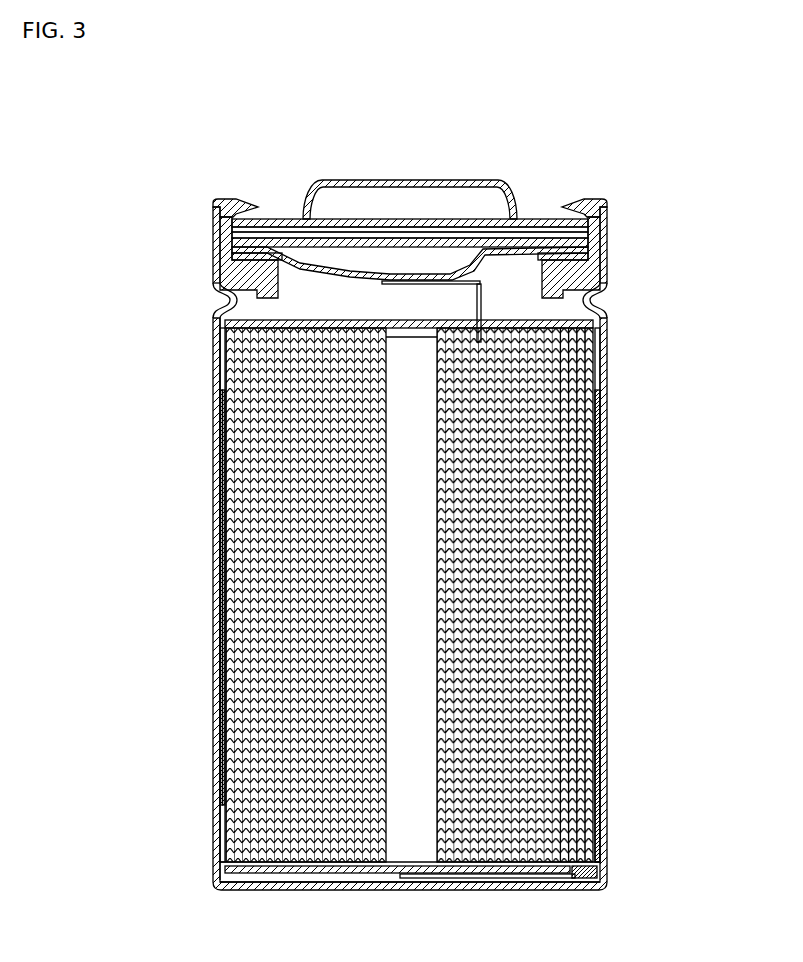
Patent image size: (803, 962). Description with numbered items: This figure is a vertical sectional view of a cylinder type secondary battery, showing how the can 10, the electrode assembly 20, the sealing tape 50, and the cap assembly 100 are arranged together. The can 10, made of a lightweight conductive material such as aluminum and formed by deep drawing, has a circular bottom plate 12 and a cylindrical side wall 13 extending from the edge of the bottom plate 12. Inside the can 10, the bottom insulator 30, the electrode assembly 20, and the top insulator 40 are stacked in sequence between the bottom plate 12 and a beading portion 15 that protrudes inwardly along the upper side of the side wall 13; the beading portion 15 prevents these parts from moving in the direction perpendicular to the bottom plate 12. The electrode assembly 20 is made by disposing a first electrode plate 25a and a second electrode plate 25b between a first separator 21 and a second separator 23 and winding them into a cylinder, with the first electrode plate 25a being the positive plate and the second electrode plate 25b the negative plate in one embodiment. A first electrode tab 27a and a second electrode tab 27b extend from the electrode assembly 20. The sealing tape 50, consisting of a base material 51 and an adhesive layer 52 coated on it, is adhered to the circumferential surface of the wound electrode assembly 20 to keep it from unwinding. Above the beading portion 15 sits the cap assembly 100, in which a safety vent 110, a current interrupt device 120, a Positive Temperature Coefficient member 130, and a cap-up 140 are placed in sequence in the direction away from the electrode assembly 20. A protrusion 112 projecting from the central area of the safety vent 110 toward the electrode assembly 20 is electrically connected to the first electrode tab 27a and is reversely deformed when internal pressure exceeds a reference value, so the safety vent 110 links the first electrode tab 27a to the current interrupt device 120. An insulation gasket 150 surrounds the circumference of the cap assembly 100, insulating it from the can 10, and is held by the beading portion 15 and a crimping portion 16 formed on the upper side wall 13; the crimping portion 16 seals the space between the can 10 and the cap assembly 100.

The cap assembly 100 is at (410, 173).
The safety vent 110 is at (328, 240).
The protrusion 112 is at (524, 108).
The cap-up 140 is at (410, 181).
The current interrupt device 120 is at (462, 240).
The Positive Temperature Coefficient member 130 is at (540, 220).
The insulation gasket 150 is at (586, 200).
The crimping portion 16 is at (238, 205).
The beading portion 15 is at (228, 303).
The top insulator 40 is at (228, 322).
The can 10 is at (220, 348).
The side wall 13 is at (218, 439).
The bottom plate 12 is at (420, 886).
The sealing tape 50 is at (158, 595).
The base material 51 is at (219, 537).
The adhesive layer 52 is at (137, 543).
The electrode assembly 20 is at (491, 579).
The first separator 21 is at (607, 372).
The second separator 23 is at (607, 437).
The first electrode plate 25a is at (606, 406).
The second electrode plate 25b is at (606, 471).
The first electrode tab 27a is at (600, 322).
The second electrode tab 27b is at (606, 868).
The bottom insulator 30 is at (282, 866).